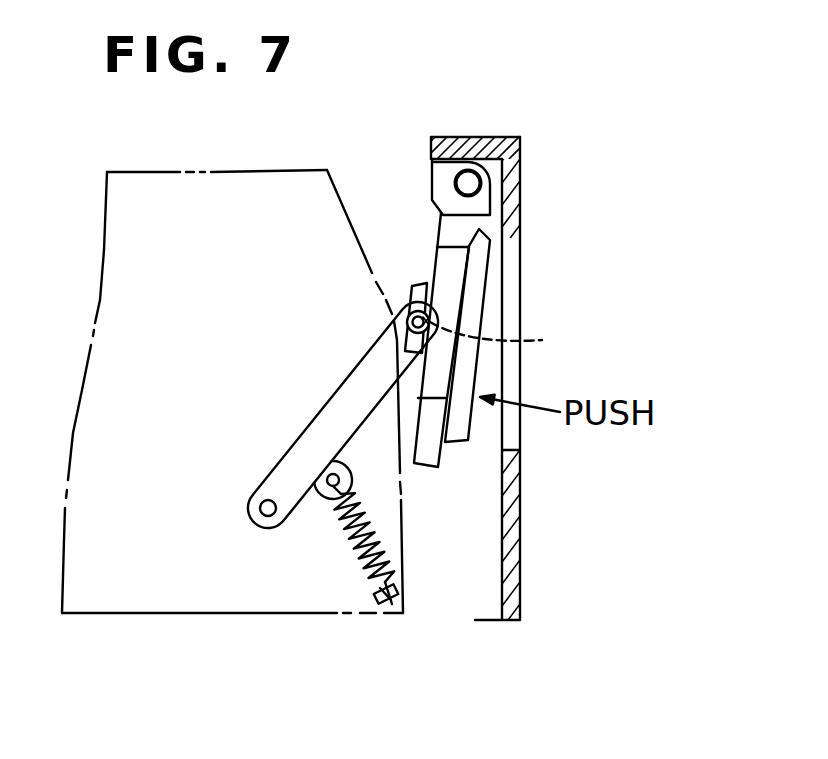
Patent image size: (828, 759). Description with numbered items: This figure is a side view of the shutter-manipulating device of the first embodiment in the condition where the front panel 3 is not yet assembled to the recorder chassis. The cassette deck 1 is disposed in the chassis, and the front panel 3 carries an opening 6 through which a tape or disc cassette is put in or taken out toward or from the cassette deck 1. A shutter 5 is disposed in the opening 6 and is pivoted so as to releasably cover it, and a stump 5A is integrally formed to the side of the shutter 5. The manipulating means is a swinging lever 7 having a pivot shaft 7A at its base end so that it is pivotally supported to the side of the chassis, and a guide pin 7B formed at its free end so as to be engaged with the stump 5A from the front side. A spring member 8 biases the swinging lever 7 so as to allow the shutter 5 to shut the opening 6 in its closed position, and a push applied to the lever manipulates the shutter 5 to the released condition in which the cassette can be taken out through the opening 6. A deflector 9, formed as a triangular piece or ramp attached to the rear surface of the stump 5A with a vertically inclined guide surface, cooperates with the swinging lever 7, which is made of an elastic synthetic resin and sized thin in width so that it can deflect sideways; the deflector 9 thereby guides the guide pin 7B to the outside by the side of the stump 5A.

The cassette deck 1 is at (255, 171).
The front panel 3 is at (515, 527).
The shutter 5 is at (438, 227).
The stump 5A is at (444, 268).
The opening 6 is at (507, 302).
The swinging lever 7 is at (340, 412).
The pivot shaft 7A is at (268, 516).
The guide pin 7B is at (513, 342).
The spring member 8 is at (373, 530).
The deflector 9 is at (412, 292).